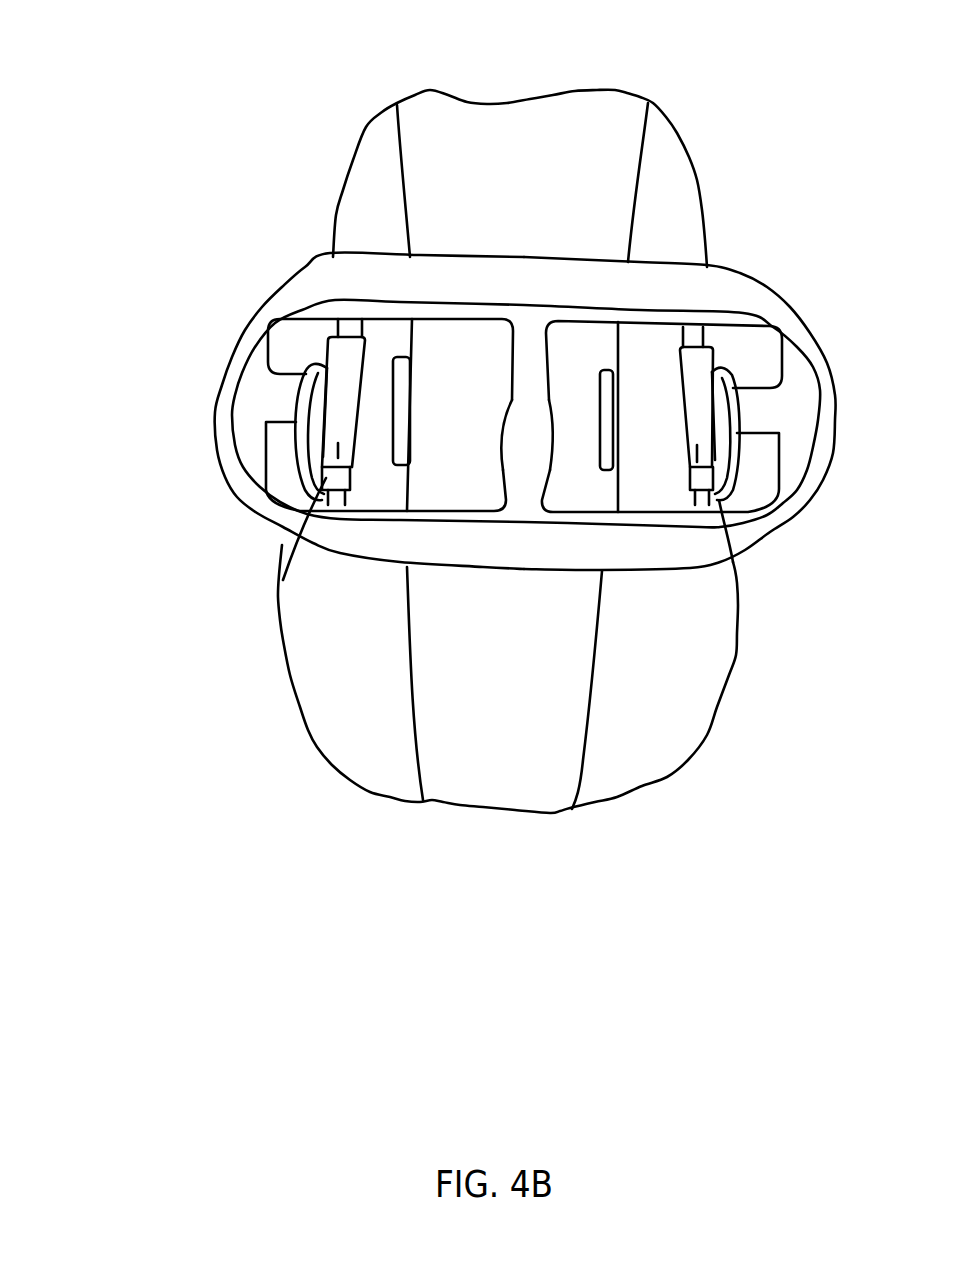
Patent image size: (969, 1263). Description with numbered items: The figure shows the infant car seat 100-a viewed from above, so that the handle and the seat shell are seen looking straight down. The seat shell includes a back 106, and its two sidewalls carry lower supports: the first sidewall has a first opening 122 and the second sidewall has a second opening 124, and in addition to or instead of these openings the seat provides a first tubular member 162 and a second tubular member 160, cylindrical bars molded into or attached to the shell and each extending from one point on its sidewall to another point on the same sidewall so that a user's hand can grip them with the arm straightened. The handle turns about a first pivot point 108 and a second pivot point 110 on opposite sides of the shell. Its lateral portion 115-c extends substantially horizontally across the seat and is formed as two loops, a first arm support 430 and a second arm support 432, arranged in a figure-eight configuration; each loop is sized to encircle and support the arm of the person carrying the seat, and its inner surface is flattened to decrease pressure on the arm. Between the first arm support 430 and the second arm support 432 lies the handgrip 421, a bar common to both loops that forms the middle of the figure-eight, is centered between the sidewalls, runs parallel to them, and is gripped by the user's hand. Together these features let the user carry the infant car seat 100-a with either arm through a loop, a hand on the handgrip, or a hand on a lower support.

The infant car seat 100-a is at (765, 1091).
The back 106 is at (594, 88).
The first pivot point 108 is at (322, 452).
The second pivot point 110 is at (721, 462).
The lateral portion 115-c is at (123, 535).
The first opening 122 is at (345, 492).
The second opening 124 is at (613, 447).
The second tubular member 160 is at (704, 480).
The first tubular member 162 is at (392, 446).
The handgrip 421 is at (520, 420).
The first arm support 430 is at (259, 301).
The second arm support 432 is at (780, 300).